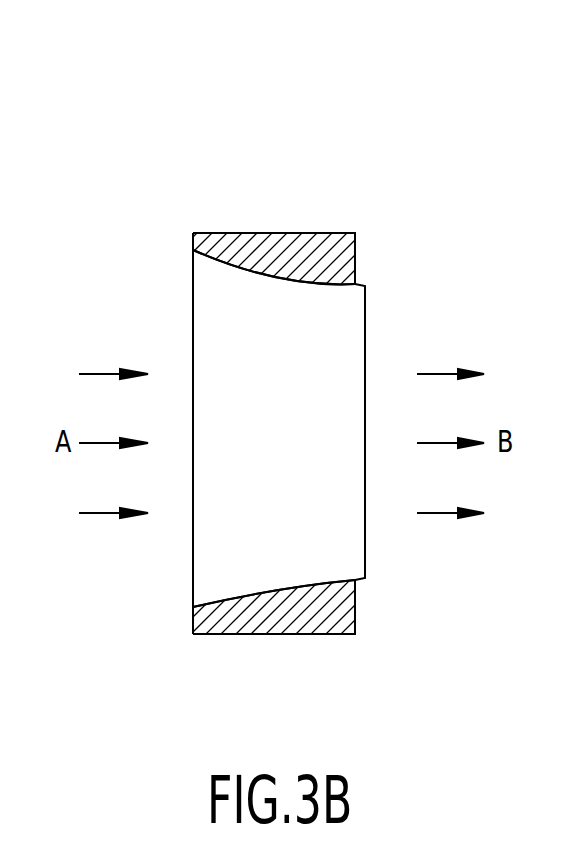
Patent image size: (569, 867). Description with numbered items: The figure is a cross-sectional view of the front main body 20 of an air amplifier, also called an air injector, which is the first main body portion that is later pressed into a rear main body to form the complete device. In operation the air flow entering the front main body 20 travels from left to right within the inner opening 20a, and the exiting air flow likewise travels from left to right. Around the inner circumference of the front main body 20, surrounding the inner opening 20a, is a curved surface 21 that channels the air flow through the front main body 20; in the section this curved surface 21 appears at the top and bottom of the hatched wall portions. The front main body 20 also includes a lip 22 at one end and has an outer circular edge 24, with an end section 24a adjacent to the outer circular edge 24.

The front main body 20 is at (333, 390).
The inner opening 20a is at (205, 305).
The curved surface 21 is at (217, 264).
The lip 22 is at (365, 284).
The outer circular edge 24 is at (245, 233).
The end section 24a is at (360, 280).